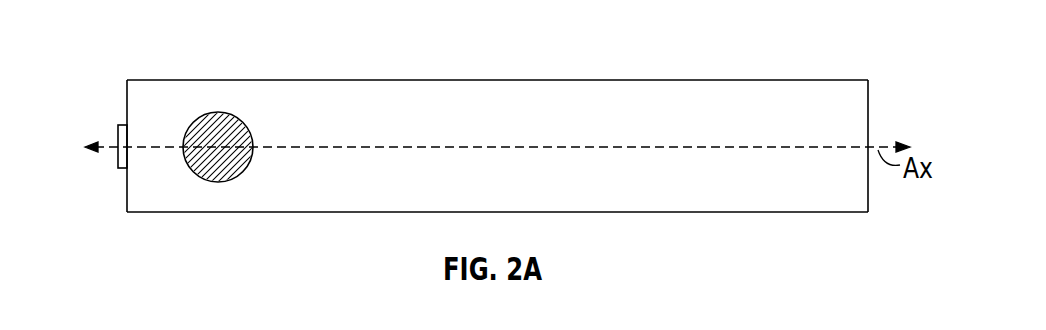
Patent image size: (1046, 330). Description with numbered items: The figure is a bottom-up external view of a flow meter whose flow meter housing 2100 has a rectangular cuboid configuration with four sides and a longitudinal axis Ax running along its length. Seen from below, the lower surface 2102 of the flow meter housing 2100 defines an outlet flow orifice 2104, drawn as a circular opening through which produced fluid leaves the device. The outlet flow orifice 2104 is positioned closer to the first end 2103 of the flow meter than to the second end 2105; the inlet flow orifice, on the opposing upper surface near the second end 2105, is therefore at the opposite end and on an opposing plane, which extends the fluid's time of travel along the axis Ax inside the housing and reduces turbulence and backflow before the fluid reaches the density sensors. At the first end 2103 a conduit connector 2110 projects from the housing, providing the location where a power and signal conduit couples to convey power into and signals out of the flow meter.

The flow meter housing 2100 is at (498, 80).
The lower surface 2102 is at (527, 184).
The first end 2103 is at (127, 193).
The outlet flow orifice 2104 is at (214, 98).
The second end 2105 is at (868, 117).
The conduit connector 2110 is at (117, 130).